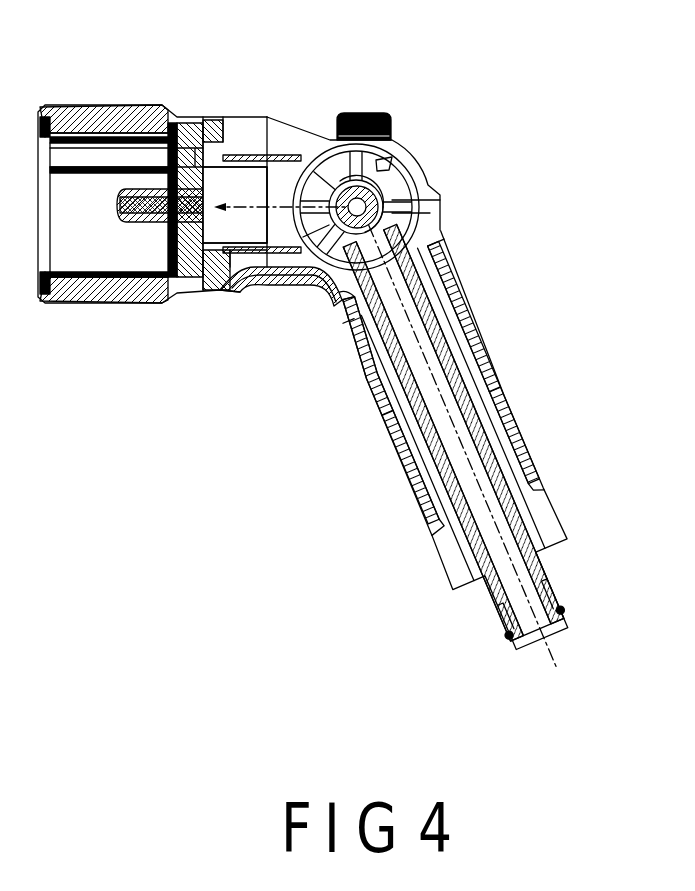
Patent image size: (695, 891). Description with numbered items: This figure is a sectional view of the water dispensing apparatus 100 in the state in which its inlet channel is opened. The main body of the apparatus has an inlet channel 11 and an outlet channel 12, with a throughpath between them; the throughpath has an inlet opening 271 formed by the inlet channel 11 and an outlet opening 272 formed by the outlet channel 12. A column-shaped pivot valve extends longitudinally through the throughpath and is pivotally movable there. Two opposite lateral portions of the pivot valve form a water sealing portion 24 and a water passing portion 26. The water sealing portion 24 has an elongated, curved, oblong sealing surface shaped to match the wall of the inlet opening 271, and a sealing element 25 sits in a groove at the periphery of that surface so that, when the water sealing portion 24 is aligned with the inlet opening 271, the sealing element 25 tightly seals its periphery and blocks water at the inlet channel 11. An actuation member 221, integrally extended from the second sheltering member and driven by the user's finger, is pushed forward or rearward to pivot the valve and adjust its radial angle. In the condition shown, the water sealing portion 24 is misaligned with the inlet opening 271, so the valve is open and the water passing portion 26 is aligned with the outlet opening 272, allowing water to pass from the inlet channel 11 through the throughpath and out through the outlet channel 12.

The spray gun 100 is at (468, 137).
The inlet channel 11 is at (432, 341).
The outlet channel 12 is at (257, 182).
The actuation member 221 is at (358, 116).
The water sealing portion 24 is at (382, 206).
The sealing element 25 is at (380, 190).
The water passing portion 26 is at (341, 186).
The inlet opening 271 is at (381, 227).
The outlet opening 272 is at (325, 185).